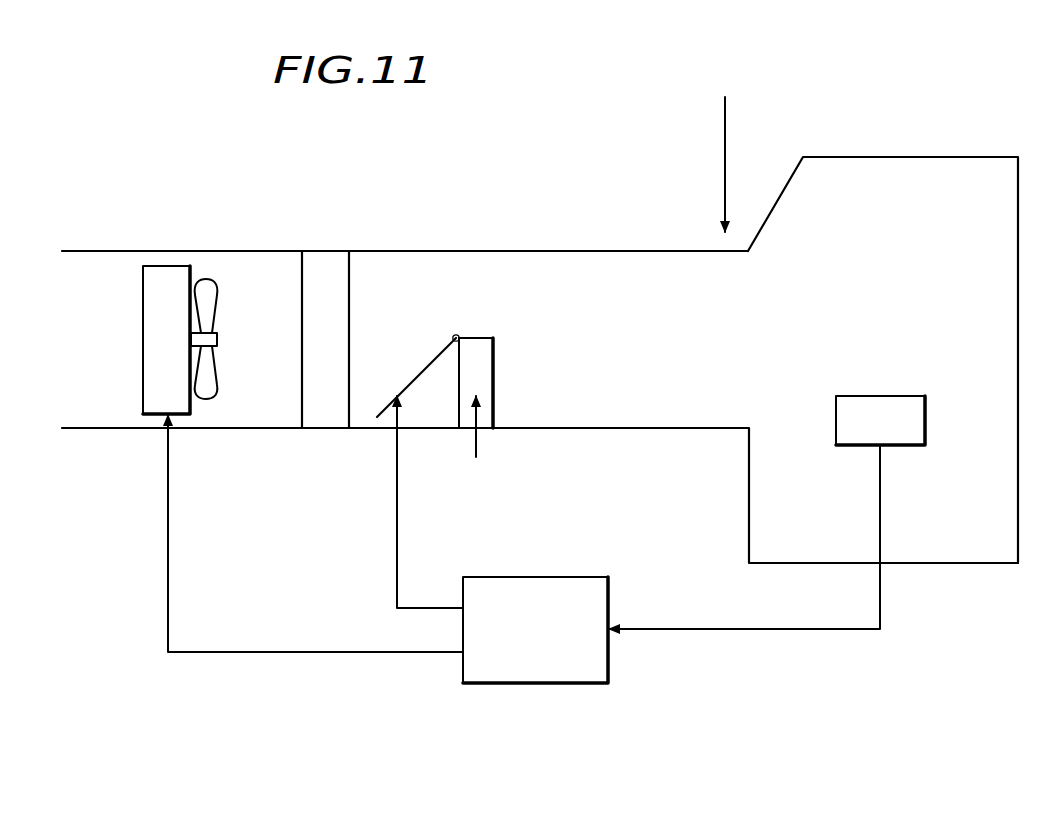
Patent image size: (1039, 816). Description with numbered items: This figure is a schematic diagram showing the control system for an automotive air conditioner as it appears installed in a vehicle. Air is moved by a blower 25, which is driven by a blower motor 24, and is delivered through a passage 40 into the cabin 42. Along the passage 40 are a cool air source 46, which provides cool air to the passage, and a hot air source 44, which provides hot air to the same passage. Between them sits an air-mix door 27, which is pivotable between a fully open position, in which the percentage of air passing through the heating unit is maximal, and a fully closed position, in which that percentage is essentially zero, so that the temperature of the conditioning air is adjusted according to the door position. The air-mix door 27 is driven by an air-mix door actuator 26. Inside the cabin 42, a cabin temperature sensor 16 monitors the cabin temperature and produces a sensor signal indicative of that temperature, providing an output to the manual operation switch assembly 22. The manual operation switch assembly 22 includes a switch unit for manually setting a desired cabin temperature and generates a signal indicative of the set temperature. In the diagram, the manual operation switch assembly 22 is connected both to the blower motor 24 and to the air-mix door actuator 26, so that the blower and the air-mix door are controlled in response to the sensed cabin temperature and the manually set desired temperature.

The cabin temperature sensor 16 is at (863, 423).
The manual operation switch assembly 22 is at (583, 600).
The blower motor 24 is at (163, 391).
The blower 25 is at (205, 281).
The air-mix door actuator 26 is at (397, 528).
The air-mix door 27 is at (428, 370).
The passage 40 is at (592, 249).
The cabin 42 is at (933, 178).
The hot air source 44 is at (493, 367).
The cool air source 46 is at (313, 340).